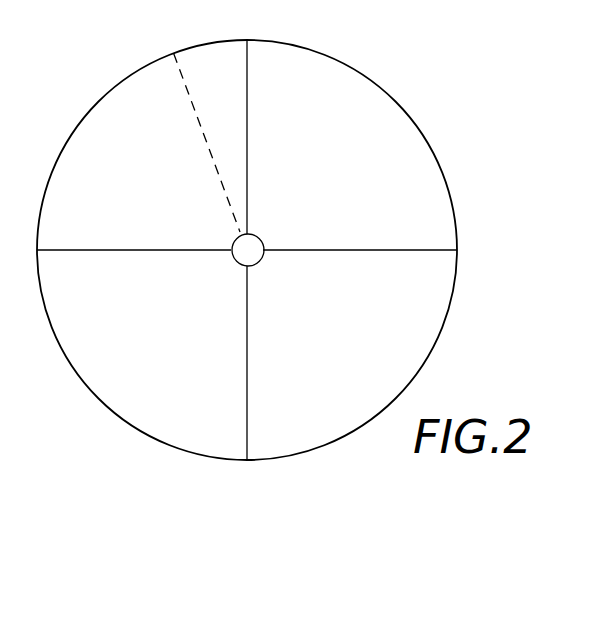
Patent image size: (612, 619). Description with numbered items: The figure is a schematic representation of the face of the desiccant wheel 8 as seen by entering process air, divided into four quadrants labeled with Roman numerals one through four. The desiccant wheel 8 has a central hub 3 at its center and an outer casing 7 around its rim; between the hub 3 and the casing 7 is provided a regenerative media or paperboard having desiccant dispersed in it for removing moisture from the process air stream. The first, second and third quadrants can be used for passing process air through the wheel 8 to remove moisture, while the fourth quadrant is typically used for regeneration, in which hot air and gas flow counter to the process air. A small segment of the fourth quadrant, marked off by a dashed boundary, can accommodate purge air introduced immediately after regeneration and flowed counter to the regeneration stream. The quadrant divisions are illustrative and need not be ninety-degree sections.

The central hub 3 is at (250, 252).
The casing 7 is at (317, 430).
The desiccant wheel 8 is at (412, 150).